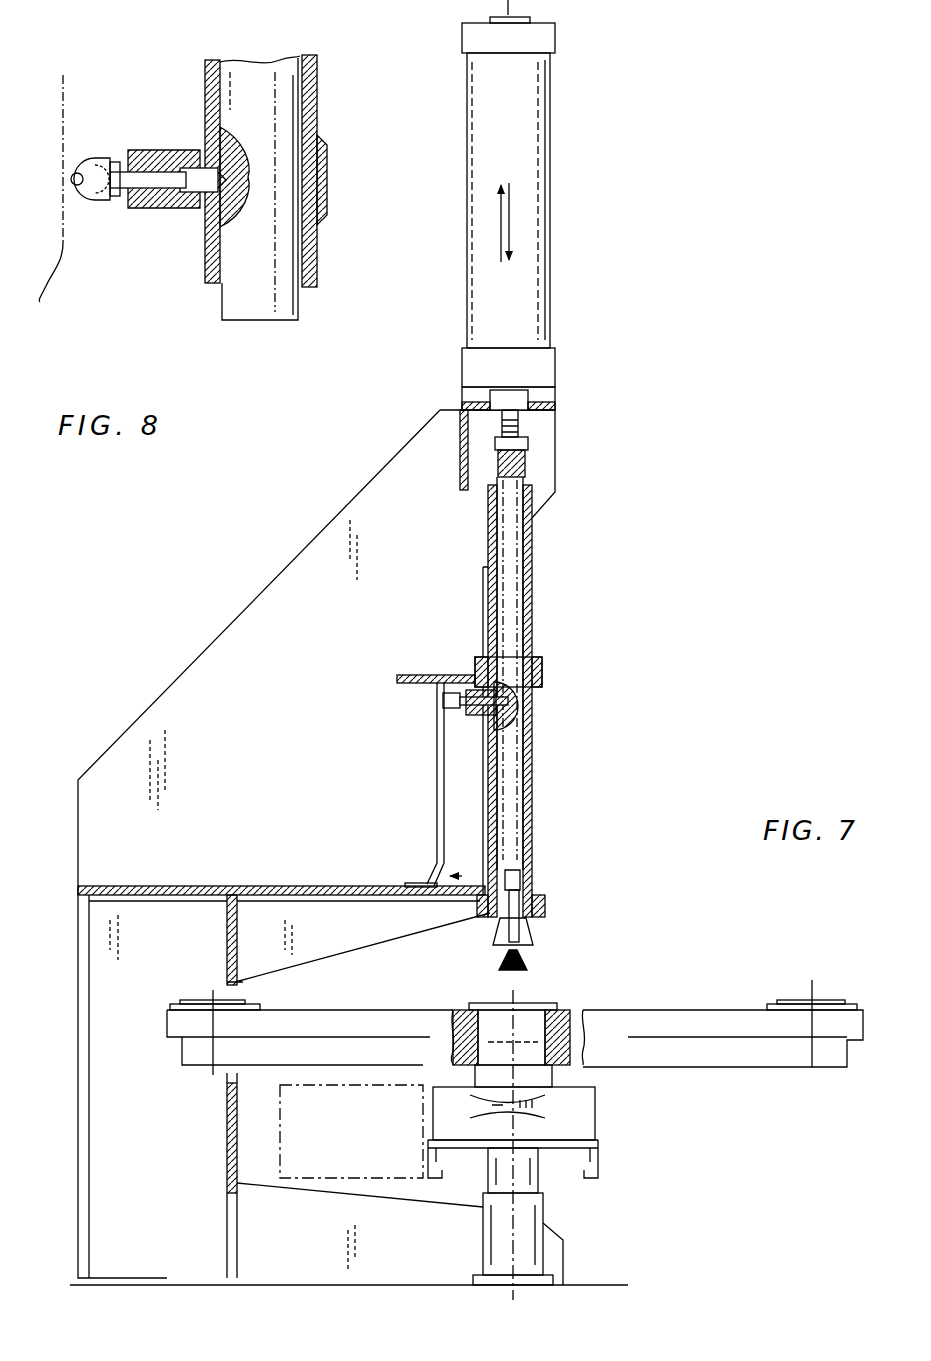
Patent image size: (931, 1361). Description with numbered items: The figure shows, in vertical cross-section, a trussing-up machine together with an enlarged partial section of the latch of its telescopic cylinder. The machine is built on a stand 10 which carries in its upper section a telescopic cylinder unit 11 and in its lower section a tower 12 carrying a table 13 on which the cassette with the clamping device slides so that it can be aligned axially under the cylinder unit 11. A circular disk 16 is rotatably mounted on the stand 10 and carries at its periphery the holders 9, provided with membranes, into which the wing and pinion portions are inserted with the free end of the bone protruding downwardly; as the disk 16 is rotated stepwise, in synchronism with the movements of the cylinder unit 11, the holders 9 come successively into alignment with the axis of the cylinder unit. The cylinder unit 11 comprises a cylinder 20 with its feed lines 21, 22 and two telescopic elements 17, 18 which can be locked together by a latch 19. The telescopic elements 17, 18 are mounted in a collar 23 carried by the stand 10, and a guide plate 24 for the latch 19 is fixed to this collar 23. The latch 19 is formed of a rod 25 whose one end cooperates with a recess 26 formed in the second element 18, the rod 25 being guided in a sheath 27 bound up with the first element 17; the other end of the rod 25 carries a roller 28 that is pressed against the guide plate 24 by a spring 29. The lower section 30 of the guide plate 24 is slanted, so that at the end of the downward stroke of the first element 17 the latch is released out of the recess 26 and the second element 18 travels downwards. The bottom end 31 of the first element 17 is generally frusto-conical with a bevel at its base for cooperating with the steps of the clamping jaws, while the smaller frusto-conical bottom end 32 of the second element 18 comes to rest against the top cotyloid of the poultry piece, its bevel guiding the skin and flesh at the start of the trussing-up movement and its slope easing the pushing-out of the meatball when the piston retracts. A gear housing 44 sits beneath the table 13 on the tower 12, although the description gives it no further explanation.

In FIG. 7, the holder 9 is at (258, 996).
In FIG. 7, the stand 10 is at (100, 912).
In FIG. 7, the telescopic cylinder unit 11 is at (616, 450).
In FIG. 7, the tower 12 is at (556, 1203).
In FIG. 7, the table 13 is at (600, 1164).
In FIG. 7, the circular disk 16 is at (752, 1070).
In FIG. 8, the first telescopic element 17 is at (320, 72).
In FIG. 7, the first telescopic element 17 is at (536, 779).
In FIG. 8, the second telescopic element 18 is at (248, 300).
In FIG. 7, the second telescopic element 18 is at (514, 855).
In FIG. 8, the latch 19 is at (88, 214).
In FIG. 7, the latch 19 is at (441, 737).
In FIG. 7, the cylinder 20 is at (548, 264).
In FIG. 7, the feed line 21 is at (461, 35).
In FIG. 7, the feed line 22 is at (461, 360).
In FIG. 7, the collar 23 is at (544, 672).
In FIG. 8, the guide plate 24 is at (64, 75).
In FIG. 7, the guide plate 24 is at (437, 798).
In FIG. 8, the rod 25 is at (140, 178).
In FIG. 8, the recess 26 is at (222, 236).
In FIG. 8, the sheath 27 is at (162, 208).
In FIG. 8, the roller 28 is at (101, 156).
In FIG. 8, the spring 29 is at (119, 165).
In FIG. 8, the lower section of guide plate 30 is at (38, 272).
In FIG. 7, the lower section of guide plate 30 is at (428, 864).
In FIG. 7, the bottom end of first element 31 is at (542, 936).
In FIG. 7, the bottom end of second element 32 is at (532, 966).
In FIG. 7, the gear housing 44 is at (540, 1114).